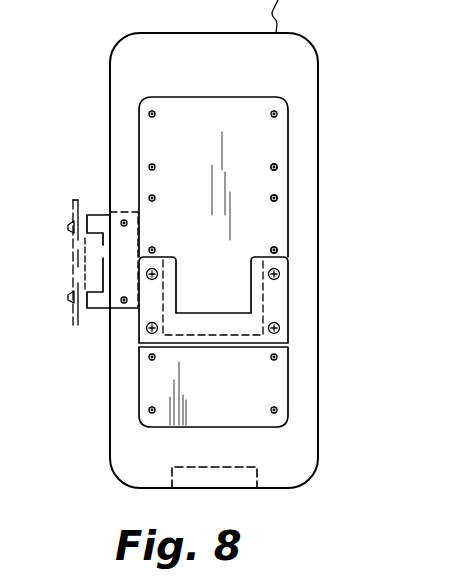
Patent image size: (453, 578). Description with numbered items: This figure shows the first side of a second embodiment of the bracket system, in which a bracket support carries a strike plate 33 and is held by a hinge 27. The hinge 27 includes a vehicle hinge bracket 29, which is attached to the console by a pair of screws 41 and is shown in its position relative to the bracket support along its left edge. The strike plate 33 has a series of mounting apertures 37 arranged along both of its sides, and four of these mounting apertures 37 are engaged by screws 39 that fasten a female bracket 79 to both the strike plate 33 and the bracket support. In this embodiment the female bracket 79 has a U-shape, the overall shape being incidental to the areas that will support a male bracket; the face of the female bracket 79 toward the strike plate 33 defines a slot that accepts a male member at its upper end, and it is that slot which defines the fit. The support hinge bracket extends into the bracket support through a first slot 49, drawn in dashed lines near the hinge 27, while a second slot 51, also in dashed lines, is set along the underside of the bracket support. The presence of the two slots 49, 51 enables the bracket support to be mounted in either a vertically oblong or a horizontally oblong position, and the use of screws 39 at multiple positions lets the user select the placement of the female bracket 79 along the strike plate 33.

The hinge 27 is at (80, 212).
The vehicle hinge bracket 29 is at (72, 250).
The strike plate 33 is at (260, 132).
The mounting apertures 37 is at (278, 250).
The screws 39 is at (280, 275).
The screws 41 is at (68, 227).
The first slot 49 is at (119, 320).
The second slot 51 is at (257, 478).
The female bracket 79 is at (248, 344).